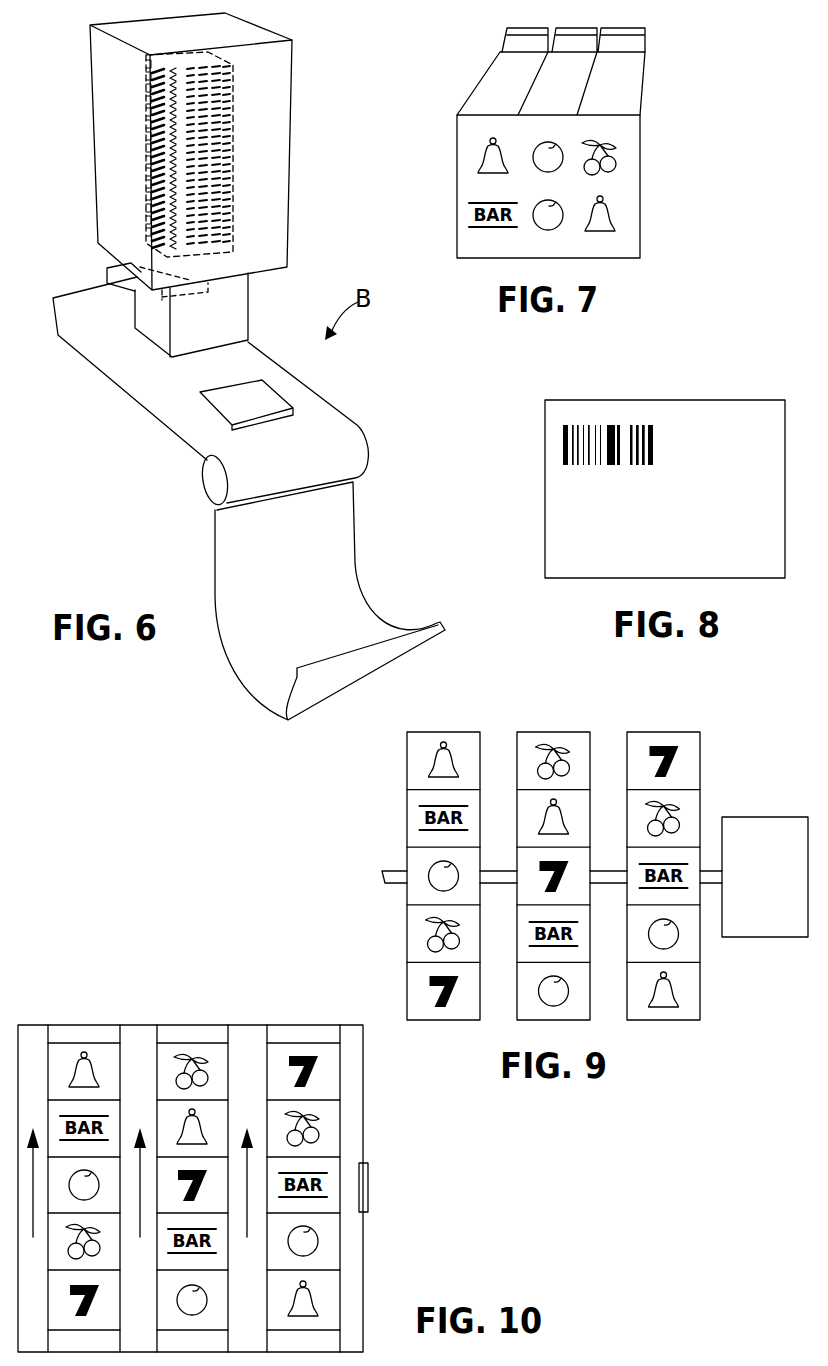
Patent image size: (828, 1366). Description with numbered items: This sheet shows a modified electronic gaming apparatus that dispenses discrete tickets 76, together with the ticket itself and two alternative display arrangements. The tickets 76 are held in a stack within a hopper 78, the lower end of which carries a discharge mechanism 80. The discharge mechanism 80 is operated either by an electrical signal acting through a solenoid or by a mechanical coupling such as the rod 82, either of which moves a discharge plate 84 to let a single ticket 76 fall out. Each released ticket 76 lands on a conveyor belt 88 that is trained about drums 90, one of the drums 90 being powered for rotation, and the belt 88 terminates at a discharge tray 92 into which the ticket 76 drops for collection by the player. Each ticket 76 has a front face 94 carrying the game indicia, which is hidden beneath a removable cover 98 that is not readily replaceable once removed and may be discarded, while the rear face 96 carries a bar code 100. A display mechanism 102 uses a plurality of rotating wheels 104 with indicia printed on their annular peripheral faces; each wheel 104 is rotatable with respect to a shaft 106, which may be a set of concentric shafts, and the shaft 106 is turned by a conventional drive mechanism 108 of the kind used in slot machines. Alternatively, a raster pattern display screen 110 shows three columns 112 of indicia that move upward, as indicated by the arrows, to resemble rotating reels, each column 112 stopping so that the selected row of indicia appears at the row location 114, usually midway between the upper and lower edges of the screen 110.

In FIG. 6, the discrete ticket 76 is at (235, 150).
In FIG. 7, the discrete ticket 76 is at (586, 143).
In FIG. 6, the hopper 78 is at (300, 58).
In FIG. 6, the discharge mechanism 80 is at (224, 307).
In FIG. 6, the rod 82 is at (104, 272).
In FIG. 6, the discharge plate 84 is at (153, 297).
In FIG. 6, the conveyor belt 88 is at (307, 392).
In FIG. 6, the drum 90 is at (212, 482).
In FIG. 6, the discharge tray 92 is at (213, 580).
In FIG. 7, the front face 94 is at (625, 128).
In FIG. 8, the rear face 96 is at (665, 465).
In FIG. 7, the removable cover 98 is at (488, 77).
In FIG. 8, the bar code 100 is at (612, 423).
In FIG. 9, the display mechanism 102 is at (578, 839).
In FIG. 9, the rotating wheel 104 is at (467, 732).
In FIG. 9, the shaft 106 is at (397, 870).
In FIG. 9, the drive mechanism 108 is at (775, 817).
In FIG. 10, the raster pattern display screen 110 is at (230, 1167).
In FIG. 10, the column 112 is at (100, 1035).
In FIG. 10, the row location 114 is at (368, 1190).